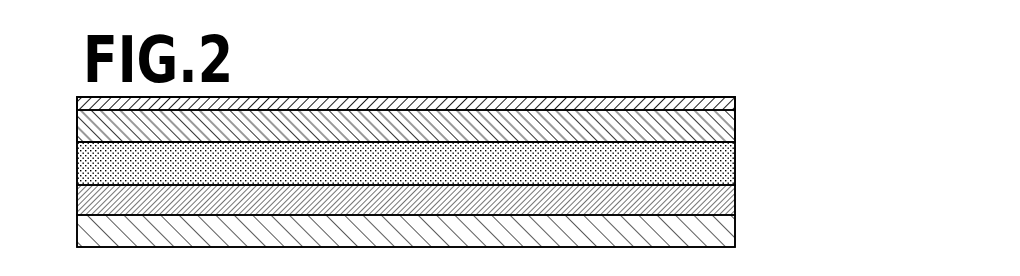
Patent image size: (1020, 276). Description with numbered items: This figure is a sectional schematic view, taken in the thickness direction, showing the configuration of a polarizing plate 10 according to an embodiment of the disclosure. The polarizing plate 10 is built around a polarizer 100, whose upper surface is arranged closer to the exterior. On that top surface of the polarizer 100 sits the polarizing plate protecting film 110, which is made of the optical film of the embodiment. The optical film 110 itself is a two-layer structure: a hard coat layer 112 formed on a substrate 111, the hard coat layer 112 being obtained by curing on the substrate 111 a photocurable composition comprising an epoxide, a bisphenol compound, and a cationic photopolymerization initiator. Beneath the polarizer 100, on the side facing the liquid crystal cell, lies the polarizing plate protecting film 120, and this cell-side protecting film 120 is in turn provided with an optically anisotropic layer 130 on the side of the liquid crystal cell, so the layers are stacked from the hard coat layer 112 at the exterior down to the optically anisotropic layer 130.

The polarizing plate 10 is at (729, 74).
The polarizing plate protecting film 110 is at (808, 78).
The hard coat layer 112 is at (723, 105).
The substrate 111 is at (722, 130).
The polarizer 100 is at (722, 162).
The polarizing plate protecting film 120 is at (722, 198).
The optically anisotropic layer 130 is at (722, 232).